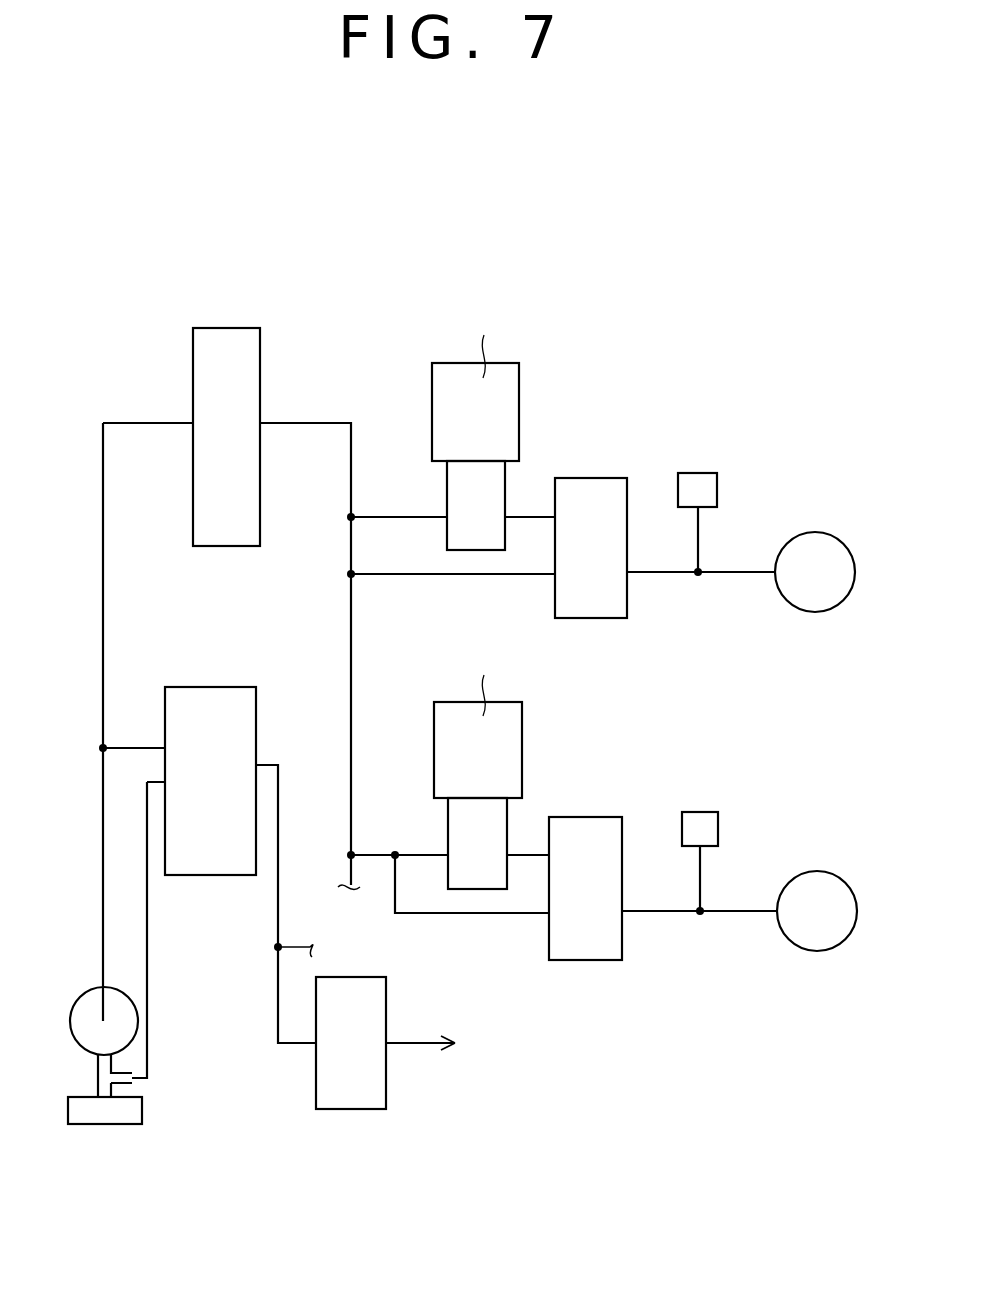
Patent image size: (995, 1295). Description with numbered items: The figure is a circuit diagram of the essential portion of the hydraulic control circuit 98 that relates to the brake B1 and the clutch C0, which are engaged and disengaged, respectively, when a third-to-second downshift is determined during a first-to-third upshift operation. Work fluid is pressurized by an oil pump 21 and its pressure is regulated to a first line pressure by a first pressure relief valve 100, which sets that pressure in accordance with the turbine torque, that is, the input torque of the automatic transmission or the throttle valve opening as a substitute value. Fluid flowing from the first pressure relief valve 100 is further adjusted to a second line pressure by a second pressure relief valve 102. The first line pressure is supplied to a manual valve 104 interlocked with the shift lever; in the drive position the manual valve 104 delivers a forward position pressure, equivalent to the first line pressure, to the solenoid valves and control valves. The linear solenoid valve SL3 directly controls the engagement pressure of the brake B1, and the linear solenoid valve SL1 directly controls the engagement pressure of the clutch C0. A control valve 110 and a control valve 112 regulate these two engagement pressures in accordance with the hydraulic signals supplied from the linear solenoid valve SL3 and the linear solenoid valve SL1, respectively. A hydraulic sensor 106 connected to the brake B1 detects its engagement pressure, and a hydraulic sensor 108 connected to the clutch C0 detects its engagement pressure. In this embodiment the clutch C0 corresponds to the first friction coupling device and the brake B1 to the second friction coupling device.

The hydraulic control circuit 98 is at (818, 265).
The manual valve 104 is at (212, 337).
The first pressure relief valve 100 is at (212, 700).
The second pressure relief valve 102 is at (352, 1105).
The hydraulic sensor 106 is at (698, 482).
The hydraulic sensor 108 is at (700, 822).
The PB1 control valve 110 is at (590, 492).
The PC0 control valve 112 is at (584, 830).
The oil pump 21 is at (82, 1002).
The linear solenoid valve SL3 is at (475, 442).
The linear solenoid valve SL1 is at (478, 782).
The brake B1 is at (815, 572).
The clutch C0 is at (817, 911).